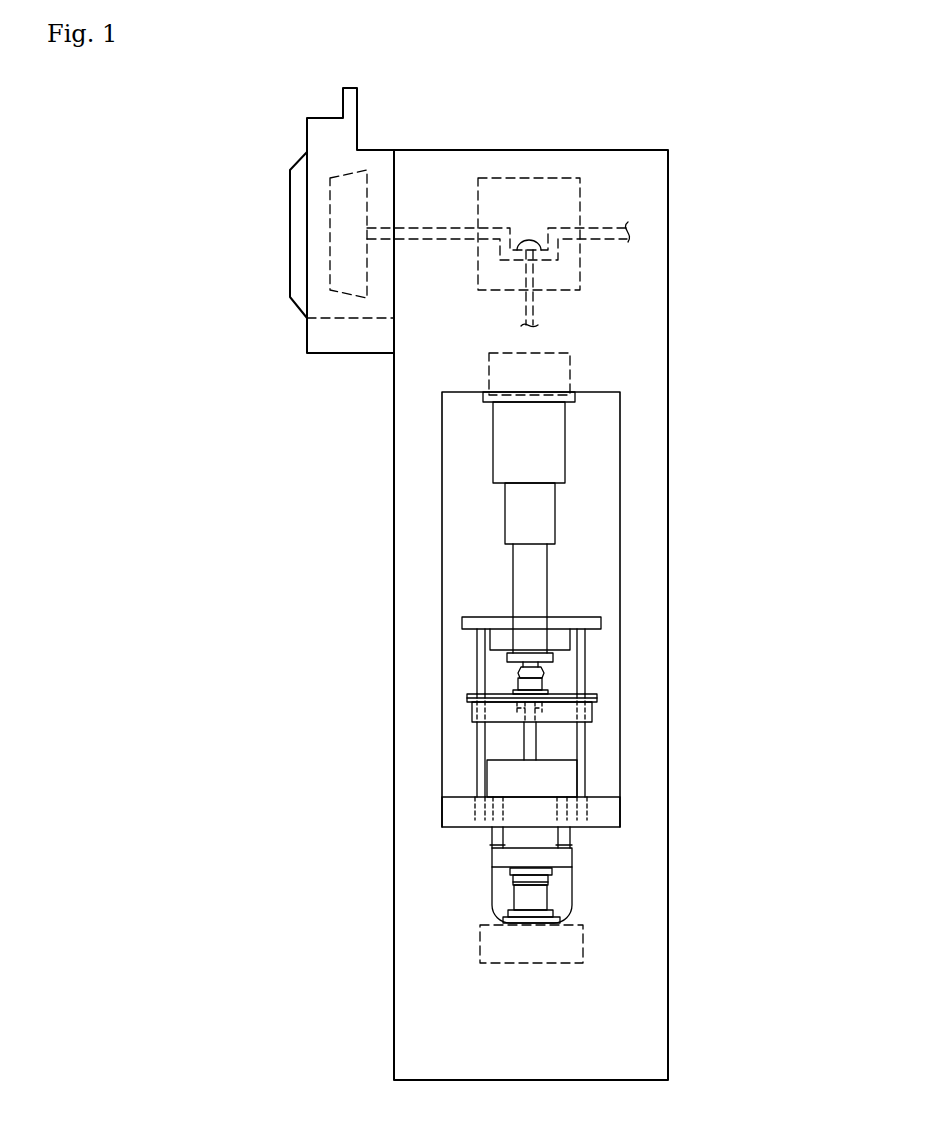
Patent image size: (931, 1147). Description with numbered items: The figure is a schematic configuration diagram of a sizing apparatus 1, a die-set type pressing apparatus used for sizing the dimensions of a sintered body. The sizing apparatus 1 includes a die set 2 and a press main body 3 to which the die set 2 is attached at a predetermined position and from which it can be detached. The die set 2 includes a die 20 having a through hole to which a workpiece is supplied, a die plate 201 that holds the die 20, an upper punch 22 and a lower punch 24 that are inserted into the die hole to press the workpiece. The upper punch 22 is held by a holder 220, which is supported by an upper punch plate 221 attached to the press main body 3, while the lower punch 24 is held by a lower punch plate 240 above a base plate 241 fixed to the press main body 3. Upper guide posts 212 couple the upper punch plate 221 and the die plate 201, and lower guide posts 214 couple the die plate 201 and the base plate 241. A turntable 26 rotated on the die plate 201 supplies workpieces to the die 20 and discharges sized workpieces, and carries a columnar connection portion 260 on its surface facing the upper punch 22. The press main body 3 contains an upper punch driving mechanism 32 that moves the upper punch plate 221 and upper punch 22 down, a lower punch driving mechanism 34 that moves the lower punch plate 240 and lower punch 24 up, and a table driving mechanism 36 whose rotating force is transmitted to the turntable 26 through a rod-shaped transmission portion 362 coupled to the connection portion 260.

The sizing apparatus 1 is at (223, 115).
The die set 2 is at (592, 713).
The press main body 3 is at (668, 468).
The die 20 is at (510, 690).
The die plate 201 is at (488, 710).
The upper punch 22 is at (507, 658).
The holder 220 is at (500, 642).
The upper punch plate 221 is at (468, 624).
The lower punch 24 is at (530, 745).
The lower punch plate 240 is at (505, 773).
The base plate 241 is at (447, 813).
The turntable 26 is at (595, 696).
The connection portion 260 is at (542, 682).
The upper guide posts 212 is at (586, 655).
The lower guide posts 214 is at (584, 782).
The upper punch driving mechanism 32 is at (570, 192).
The lower punch driving mechanism 34 is at (570, 948).
The table driving mechanism 36 is at (555, 373).
The transmission portion 362 is at (538, 593).